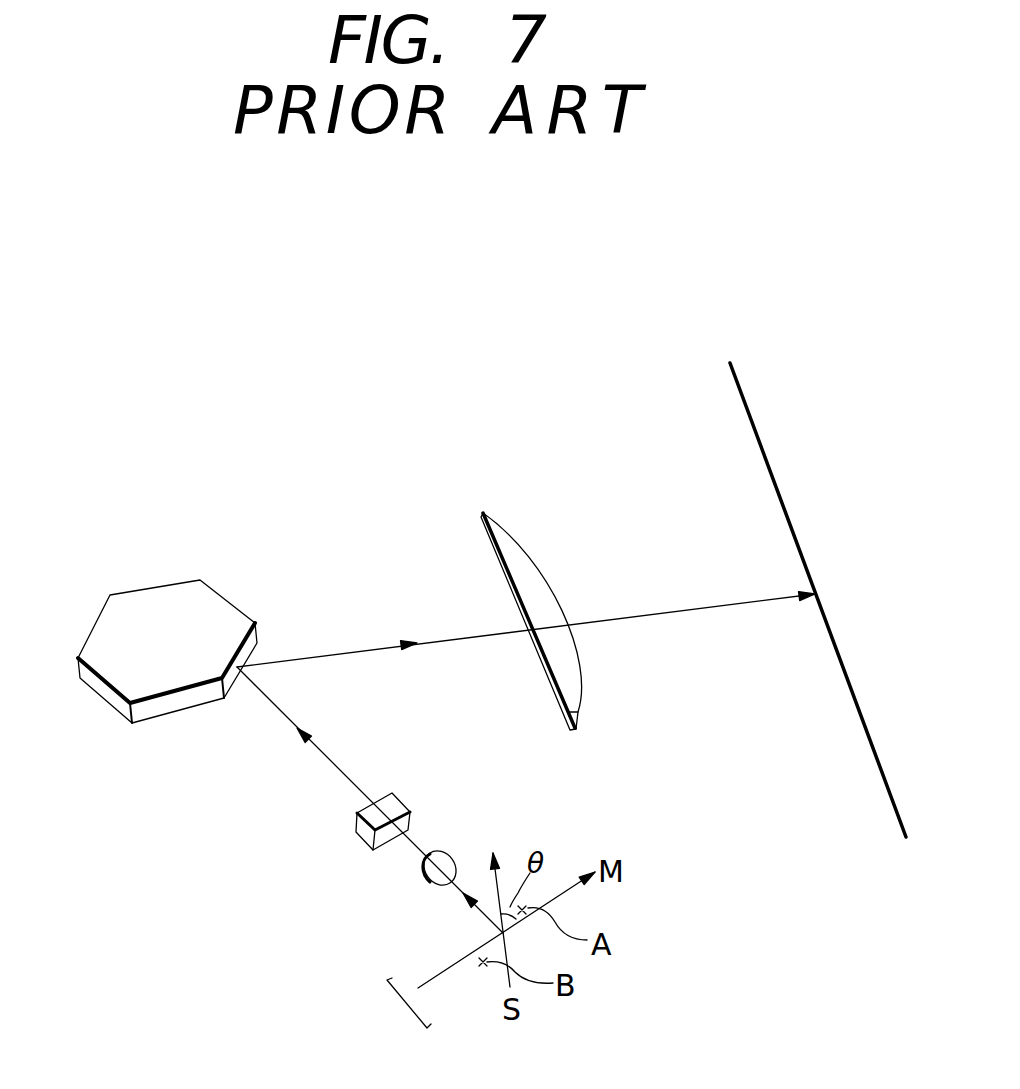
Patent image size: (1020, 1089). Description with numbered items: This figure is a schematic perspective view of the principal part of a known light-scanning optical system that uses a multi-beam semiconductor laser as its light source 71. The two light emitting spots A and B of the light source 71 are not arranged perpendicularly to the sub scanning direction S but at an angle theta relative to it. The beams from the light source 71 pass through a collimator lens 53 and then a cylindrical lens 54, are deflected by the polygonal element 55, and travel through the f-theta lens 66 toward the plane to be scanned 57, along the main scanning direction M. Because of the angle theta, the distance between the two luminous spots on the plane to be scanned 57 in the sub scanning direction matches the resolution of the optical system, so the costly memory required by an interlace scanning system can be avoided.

The collimator lens 53 is at (425, 882).
The cylindrical lens 54 is at (360, 840).
The polygon mirror 55 is at (170, 682).
The plane to be scanned 57 is at (742, 388).
The fθ lens 66 is at (515, 537).
The light source 71 is at (405, 1005).